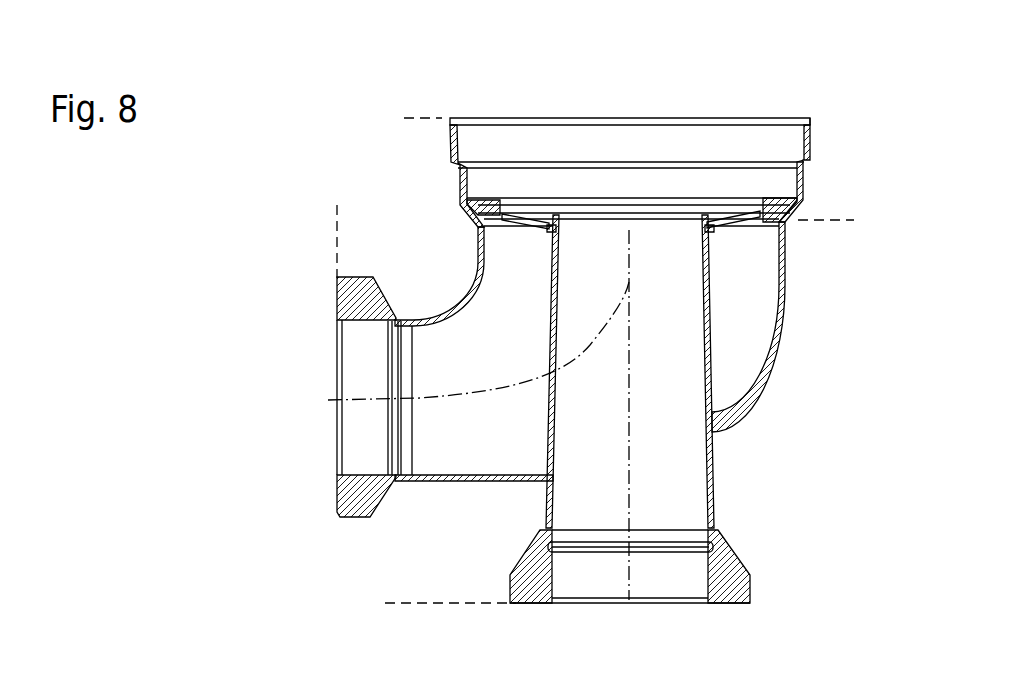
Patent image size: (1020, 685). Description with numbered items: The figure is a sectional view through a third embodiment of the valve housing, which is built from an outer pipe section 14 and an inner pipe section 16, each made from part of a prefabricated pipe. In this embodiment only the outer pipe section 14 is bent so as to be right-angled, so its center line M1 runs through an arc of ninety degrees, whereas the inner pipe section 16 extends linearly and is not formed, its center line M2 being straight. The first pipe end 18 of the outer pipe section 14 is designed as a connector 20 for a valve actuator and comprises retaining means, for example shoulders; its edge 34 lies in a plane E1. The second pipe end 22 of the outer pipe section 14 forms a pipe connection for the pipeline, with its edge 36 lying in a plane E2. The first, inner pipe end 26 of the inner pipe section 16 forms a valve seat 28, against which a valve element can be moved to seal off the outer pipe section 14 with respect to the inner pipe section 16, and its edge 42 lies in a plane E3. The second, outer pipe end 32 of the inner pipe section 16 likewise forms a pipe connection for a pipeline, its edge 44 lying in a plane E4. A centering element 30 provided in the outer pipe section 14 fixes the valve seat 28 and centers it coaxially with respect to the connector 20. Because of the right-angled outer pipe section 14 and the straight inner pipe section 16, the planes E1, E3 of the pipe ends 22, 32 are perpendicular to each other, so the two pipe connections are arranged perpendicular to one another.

The outer pipe section 14 is at (786, 306).
The inner pipe section 16 is at (712, 467).
The first pipe end 18 is at (812, 137).
The connector 20 is at (756, 109).
The second pipe end 22 is at (375, 493).
The first inner pipe end 26 is at (704, 258).
The valve seat 28 is at (675, 207).
The centering element 30 is at (762, 201).
The second outer pipe end 32 is at (742, 572).
The edge of the first pipe end 34 is at (340, 490).
The edge of the second pipe end 36 is at (808, 119).
The edge of the inner pipe end 42 is at (727, 605).
The edge of the outer pipe end 44 is at (558, 219).
The center line of the outer pipe section M1 is at (383, 400).
The center line of the inner pipe section M2 is at (628, 615).
The plane of the edge of the first pipe end E1 is at (340, 208).
The plane of the edge of the second pipe end E2 is at (414, 118).
The plane of the edge of the inner pipe end E3 is at (414, 607).
The plane of the edge of the outer pipe end E4 is at (832, 219).